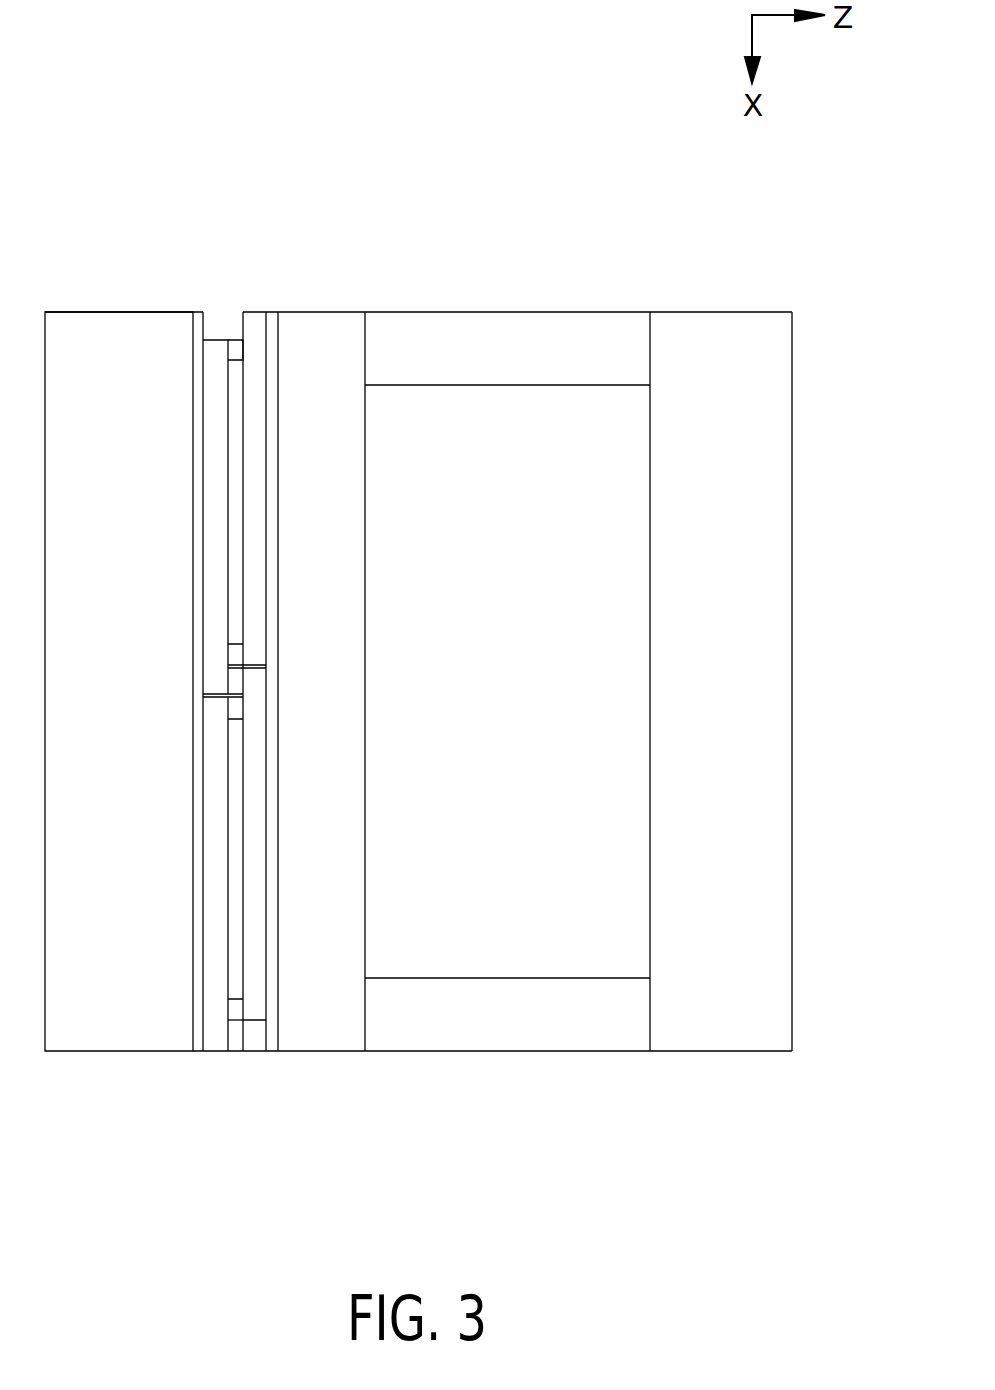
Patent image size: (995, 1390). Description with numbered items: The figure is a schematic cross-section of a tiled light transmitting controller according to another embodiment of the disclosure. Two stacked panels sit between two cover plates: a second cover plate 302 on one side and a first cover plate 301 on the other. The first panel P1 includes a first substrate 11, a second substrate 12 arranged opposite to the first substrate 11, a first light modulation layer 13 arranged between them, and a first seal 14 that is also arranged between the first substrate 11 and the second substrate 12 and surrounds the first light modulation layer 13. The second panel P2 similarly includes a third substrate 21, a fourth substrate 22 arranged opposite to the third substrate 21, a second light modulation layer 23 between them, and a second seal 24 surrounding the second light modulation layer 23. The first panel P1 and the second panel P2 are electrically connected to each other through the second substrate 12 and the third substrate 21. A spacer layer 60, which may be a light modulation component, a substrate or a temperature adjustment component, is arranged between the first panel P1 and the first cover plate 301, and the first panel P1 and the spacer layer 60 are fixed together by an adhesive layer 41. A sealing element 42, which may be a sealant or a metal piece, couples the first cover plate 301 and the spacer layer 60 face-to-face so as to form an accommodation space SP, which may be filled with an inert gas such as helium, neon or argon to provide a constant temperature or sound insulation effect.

The second cover plate 302 is at (103, 327).
The first cover plate 301 is at (717, 327).
The adhesive layer 41 is at (197, 990).
The sealing element 42 is at (478, 327).
The spacer layer 60 is at (342, 327).
The accommodation space SP is at (593, 403).
The first substrate 11 is at (253, 323).
The second substrate 12 is at (215, 343).
The first light modulation layer 13 is at (237, 380).
The first seal 14 is at (237, 343).
The third substrate 21 is at (256, 1024).
The fourth substrate 22 is at (215, 1020).
The second light modulation layer 23 is at (237, 984).
The second seal 24 is at (235, 1018).
The first panel P1 is at (145, 235).
The second panel P2 is at (143, 1127).